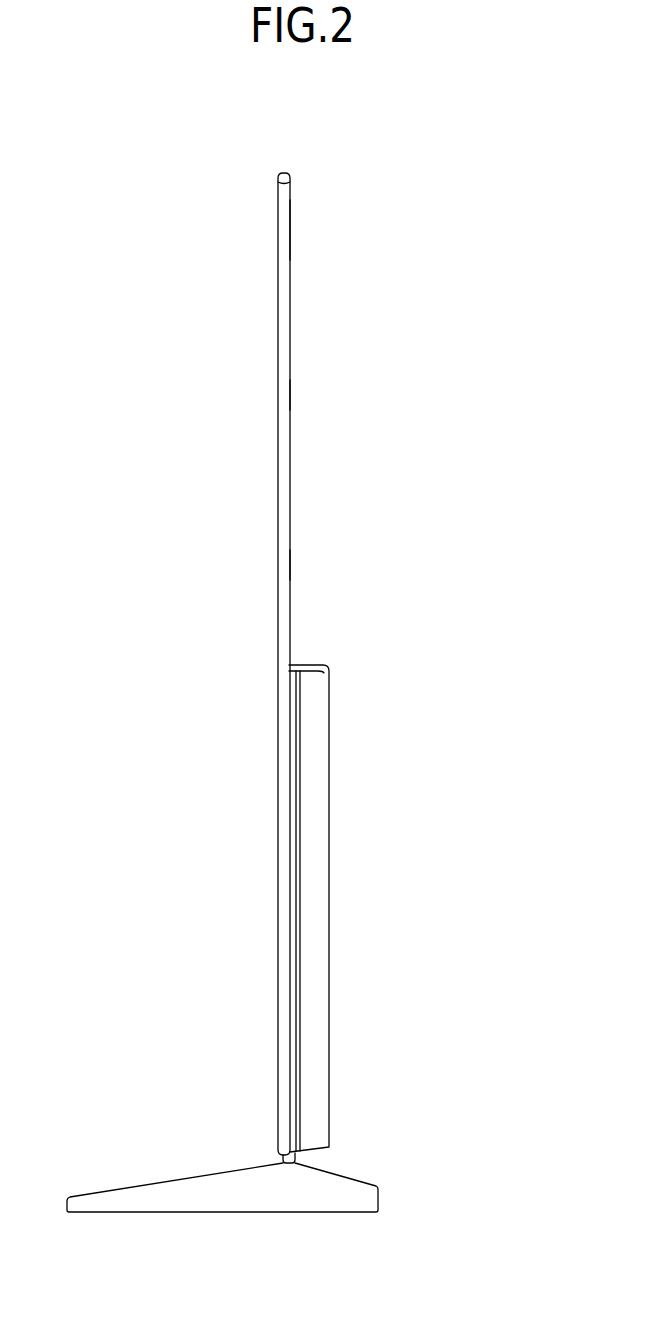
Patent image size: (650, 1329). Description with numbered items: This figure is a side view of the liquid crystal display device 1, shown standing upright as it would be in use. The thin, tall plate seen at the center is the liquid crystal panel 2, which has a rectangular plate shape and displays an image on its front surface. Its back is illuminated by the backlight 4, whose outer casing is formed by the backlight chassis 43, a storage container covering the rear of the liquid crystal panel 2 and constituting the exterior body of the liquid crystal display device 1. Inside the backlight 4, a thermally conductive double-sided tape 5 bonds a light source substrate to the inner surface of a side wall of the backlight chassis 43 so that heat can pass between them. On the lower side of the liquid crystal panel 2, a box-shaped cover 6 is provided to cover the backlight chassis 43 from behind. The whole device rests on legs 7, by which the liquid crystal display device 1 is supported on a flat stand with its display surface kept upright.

The liquid crystal display device 1 is at (172, 160).
The liquid crystal panel 2 is at (278, 330).
The backlight 4 is at (418, 238).
The backlight chassis 43 is at (302, 396).
The double-sided tape 5 is at (285, 565).
The cover 6 is at (316, 882).
The legs 7 is at (365, 1200).